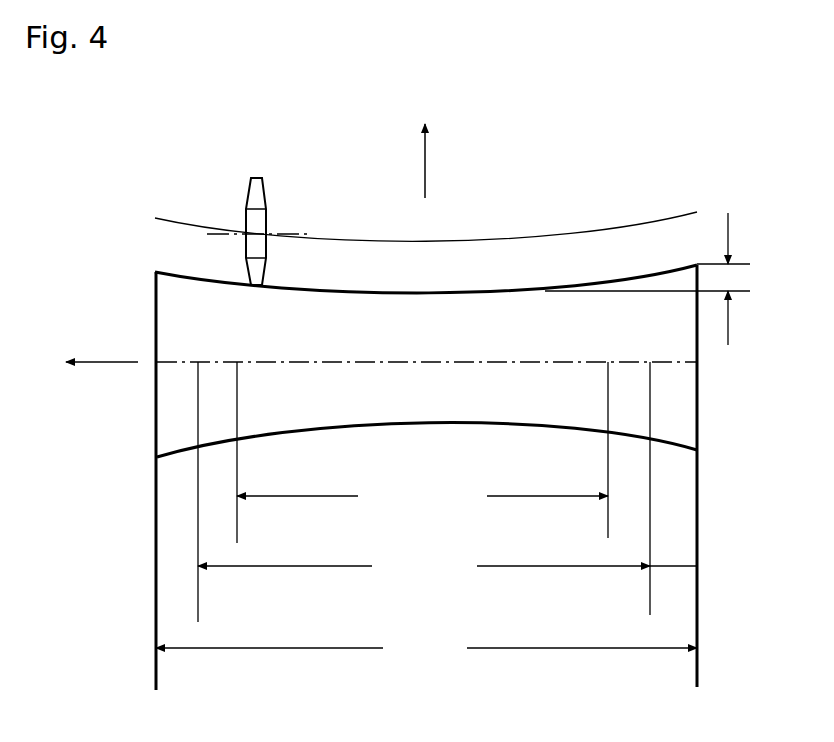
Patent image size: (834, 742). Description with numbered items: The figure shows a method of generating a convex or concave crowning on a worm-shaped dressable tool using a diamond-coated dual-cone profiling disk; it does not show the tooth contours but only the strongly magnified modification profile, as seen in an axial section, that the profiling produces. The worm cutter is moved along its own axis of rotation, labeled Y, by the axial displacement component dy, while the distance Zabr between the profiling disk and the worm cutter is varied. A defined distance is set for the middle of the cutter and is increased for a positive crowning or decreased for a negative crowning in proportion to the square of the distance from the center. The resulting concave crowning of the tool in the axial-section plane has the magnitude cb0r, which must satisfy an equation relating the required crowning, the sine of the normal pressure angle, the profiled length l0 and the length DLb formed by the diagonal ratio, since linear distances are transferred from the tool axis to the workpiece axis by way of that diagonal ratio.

The distance between profiling disk and worm cutter Zabr is at (475, 161).
The axis of rotation direction of the tool Y is at (102, 398).
The concave crowning of the tool in the axial-section plane cb0r is at (677, 279).
The diagonal ratio length DLb is at (422, 452).
The displacement component of the tool dy is at (447, 492).
The profiling length l0 is at (426, 642).